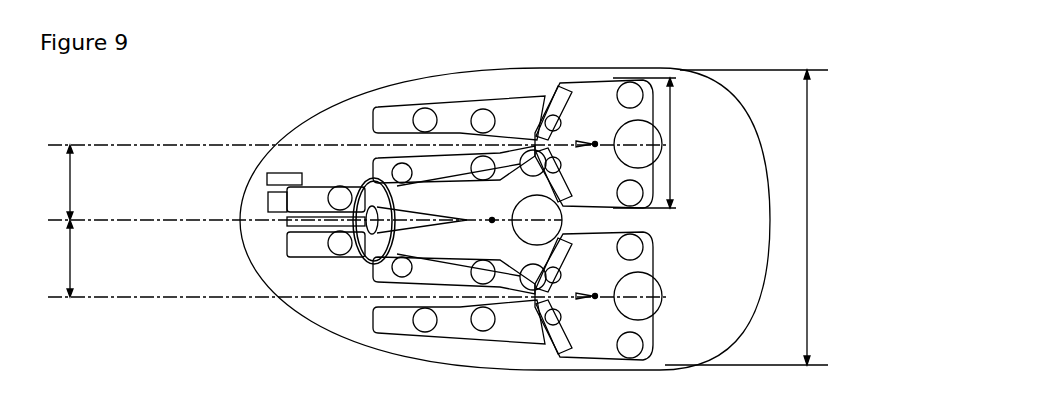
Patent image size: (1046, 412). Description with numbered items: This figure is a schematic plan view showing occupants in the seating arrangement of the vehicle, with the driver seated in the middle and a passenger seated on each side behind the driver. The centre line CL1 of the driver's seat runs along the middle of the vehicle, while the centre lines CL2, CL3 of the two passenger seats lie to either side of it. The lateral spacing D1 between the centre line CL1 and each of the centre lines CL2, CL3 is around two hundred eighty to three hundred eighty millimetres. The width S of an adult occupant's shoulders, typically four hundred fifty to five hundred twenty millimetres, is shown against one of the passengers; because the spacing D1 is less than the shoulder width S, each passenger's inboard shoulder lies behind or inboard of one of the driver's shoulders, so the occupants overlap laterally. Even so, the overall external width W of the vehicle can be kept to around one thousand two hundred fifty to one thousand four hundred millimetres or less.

The centre line of the driver's seat CL1 is at (305, 211).
The centre line of the passenger seat CL2 is at (358, 288).
The centre line of the passenger seat CL3 is at (358, 136).
The spacing between centre lines D1 is at (56, 221).
The width of an adult occupant's shoulders S is at (651, 143).
The overall external width of the vehicle W is at (749, 217).